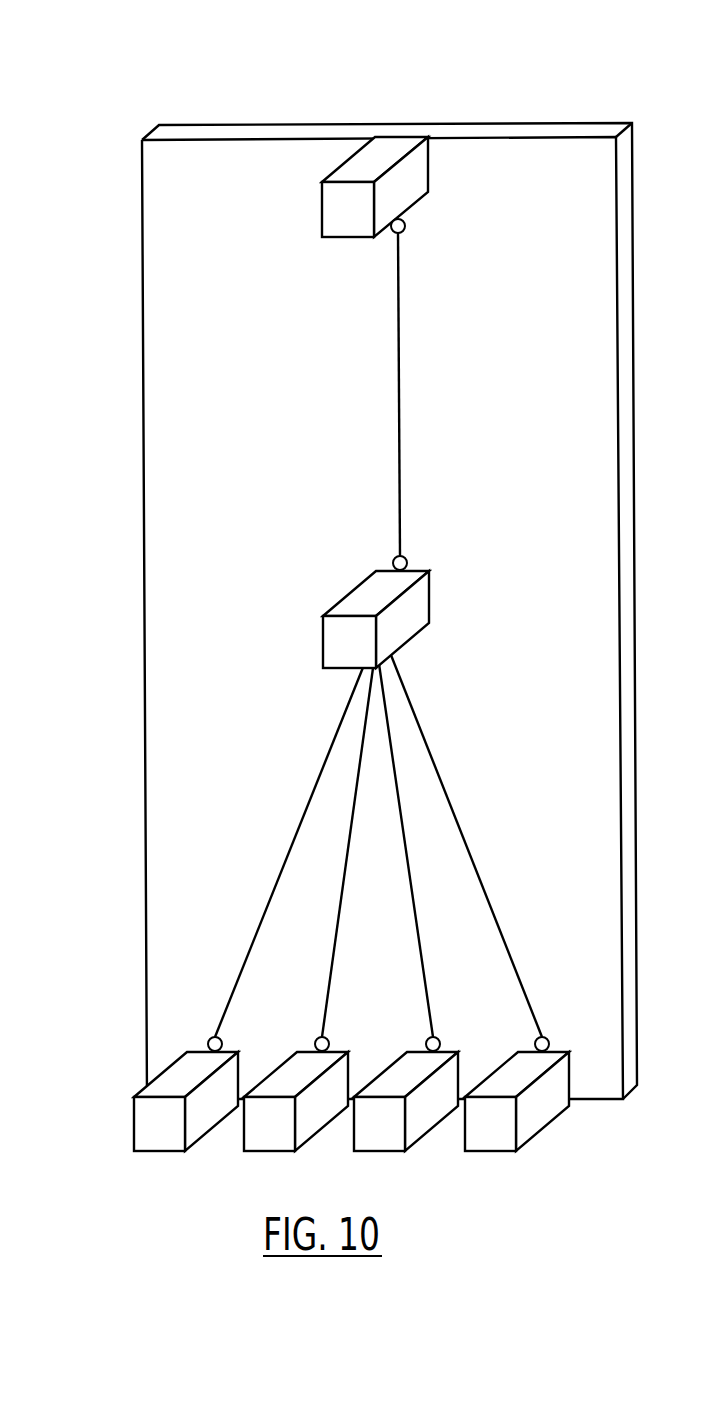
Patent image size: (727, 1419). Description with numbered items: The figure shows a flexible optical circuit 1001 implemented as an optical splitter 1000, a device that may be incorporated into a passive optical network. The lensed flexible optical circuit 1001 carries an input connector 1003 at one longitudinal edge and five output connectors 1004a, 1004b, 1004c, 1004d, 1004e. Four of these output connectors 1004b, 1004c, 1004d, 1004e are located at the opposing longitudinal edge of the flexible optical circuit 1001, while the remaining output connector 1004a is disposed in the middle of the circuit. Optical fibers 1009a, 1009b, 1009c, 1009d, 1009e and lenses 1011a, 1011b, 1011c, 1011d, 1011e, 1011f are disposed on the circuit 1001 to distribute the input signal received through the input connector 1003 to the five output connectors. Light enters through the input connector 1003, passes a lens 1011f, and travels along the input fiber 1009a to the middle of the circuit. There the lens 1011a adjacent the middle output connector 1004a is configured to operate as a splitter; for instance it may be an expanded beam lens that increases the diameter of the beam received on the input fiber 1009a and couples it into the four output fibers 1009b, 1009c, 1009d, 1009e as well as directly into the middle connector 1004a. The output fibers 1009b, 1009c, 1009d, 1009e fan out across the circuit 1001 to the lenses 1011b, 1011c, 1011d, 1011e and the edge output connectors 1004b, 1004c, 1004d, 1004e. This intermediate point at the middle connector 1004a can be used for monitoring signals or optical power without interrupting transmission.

The optical splitter 1000 is at (168, 98).
The flexible optical circuit 1001 is at (165, 422).
The input connector 1003 is at (340, 217).
The middle output connector 1004a is at (403, 618).
The output connector 1004b is at (162, 1138).
The output connector 1004c is at (274, 1138).
The output connector 1004d is at (385, 1138).
The output connector 1004e is at (497, 1138).
The input fiber 1009a is at (399, 366).
The output fiber 1009b is at (290, 843).
The output fiber 1009c is at (332, 943).
The output fiber 1009d is at (453, 923).
The output fiber 1009e is at (502, 822).
The lens 1011a is at (408, 562).
The lens 1011b is at (207, 1040).
The lens 1011c is at (314, 1040).
The lens 1011d is at (440, 1038).
The lens 1011e is at (549, 1038).
The lens 1011f is at (406, 224).